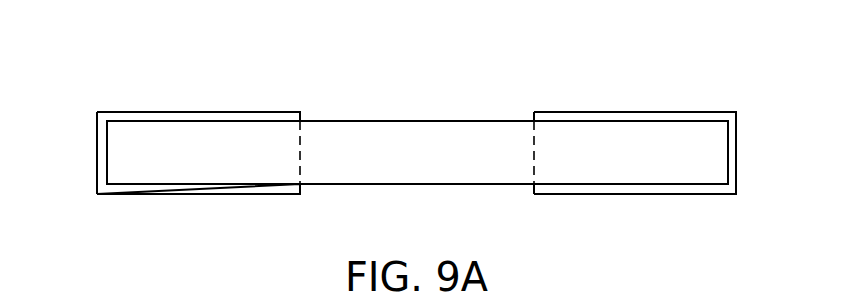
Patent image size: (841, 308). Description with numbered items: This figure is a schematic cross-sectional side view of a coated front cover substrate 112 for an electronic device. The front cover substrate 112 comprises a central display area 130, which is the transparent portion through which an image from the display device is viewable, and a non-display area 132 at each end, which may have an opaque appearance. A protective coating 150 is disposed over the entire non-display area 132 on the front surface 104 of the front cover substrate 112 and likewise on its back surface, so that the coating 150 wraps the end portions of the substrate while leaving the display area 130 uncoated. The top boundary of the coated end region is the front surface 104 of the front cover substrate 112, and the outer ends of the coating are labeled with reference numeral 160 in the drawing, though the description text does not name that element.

The front surface 104 is at (553, 120).
The front cover substrate 112 is at (487, 98).
The display area 130 is at (507, 185).
The non-display area 132 is at (192, 184).
The protective coating 150 is at (120, 112).
The side wall / end cap 160 is at (97, 152).